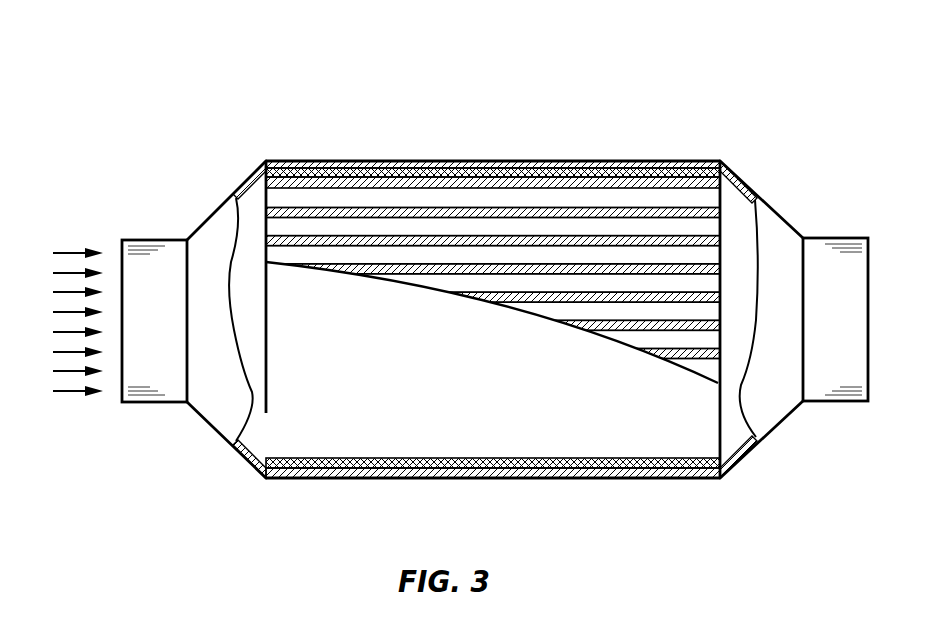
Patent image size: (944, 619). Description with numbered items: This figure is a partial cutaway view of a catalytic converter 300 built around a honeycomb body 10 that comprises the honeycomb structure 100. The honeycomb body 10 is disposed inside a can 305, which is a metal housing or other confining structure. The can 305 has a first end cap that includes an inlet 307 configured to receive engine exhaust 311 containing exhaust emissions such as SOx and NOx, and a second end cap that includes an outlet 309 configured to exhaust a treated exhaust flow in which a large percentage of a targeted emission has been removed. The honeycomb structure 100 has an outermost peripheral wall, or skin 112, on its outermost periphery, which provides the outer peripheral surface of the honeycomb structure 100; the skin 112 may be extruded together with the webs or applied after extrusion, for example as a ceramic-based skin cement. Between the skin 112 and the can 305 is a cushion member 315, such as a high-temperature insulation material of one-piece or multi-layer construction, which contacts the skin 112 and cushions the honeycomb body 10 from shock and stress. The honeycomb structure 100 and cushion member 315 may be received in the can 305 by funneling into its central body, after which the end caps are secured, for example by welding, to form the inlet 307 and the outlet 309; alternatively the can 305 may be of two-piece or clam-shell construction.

The catalytic converter 300 is at (212, 78).
The honeycomb structure 100 is at (383, 173).
The cushion member 315 is at (514, 166).
The can 305 is at (613, 161).
The honeycomb body 10 is at (722, 165).
The engine exhaust 311 is at (68, 252).
The inlet 307 is at (155, 240).
The outlet 309 is at (838, 238).
The skin 112 is at (375, 403).